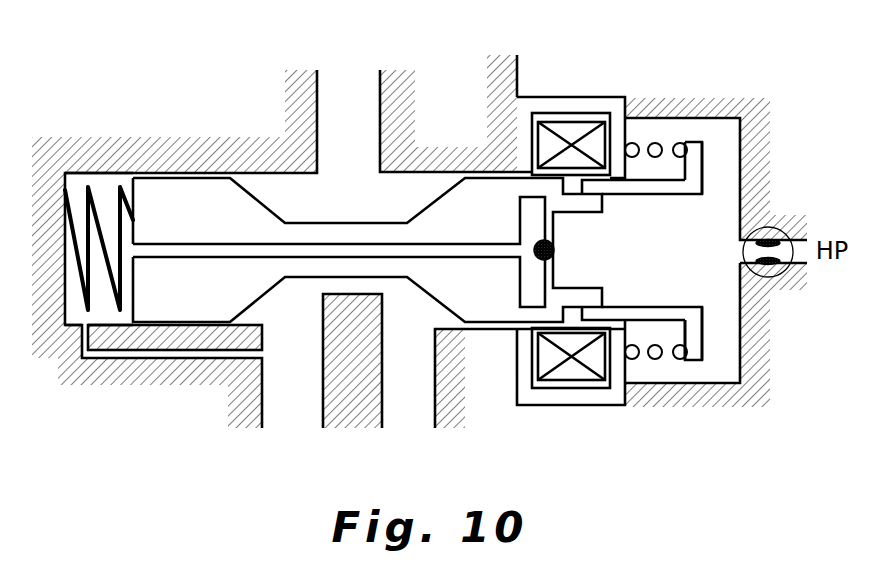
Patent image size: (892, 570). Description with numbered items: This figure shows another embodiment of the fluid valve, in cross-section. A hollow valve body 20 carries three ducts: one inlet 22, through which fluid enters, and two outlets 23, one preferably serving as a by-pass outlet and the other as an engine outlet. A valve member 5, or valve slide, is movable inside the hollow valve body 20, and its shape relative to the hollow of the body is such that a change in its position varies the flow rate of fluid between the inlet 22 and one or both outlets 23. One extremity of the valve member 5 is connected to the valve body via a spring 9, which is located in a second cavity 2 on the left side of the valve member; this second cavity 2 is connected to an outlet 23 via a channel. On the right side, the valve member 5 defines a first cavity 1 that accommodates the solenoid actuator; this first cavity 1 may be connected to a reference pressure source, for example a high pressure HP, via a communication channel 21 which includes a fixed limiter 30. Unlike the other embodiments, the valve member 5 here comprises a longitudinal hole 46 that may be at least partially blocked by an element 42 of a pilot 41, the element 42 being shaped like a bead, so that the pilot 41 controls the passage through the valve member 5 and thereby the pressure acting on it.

The first cavity 1 is at (633, 260).
The second cavity 2 is at (97, 206).
The valve member 5 is at (467, 221).
The spring 9 is at (105, 248).
The hollow valve body 20 is at (692, 388).
The communication channel 21 is at (808, 243).
The inlet 22 is at (350, 108).
The outlet 23 is at (295, 382).
The fixed limiter 30 is at (782, 273).
The pilot 41 is at (697, 173).
The element 42 is at (549, 241).
The longitudinal hole 46 is at (188, 252).